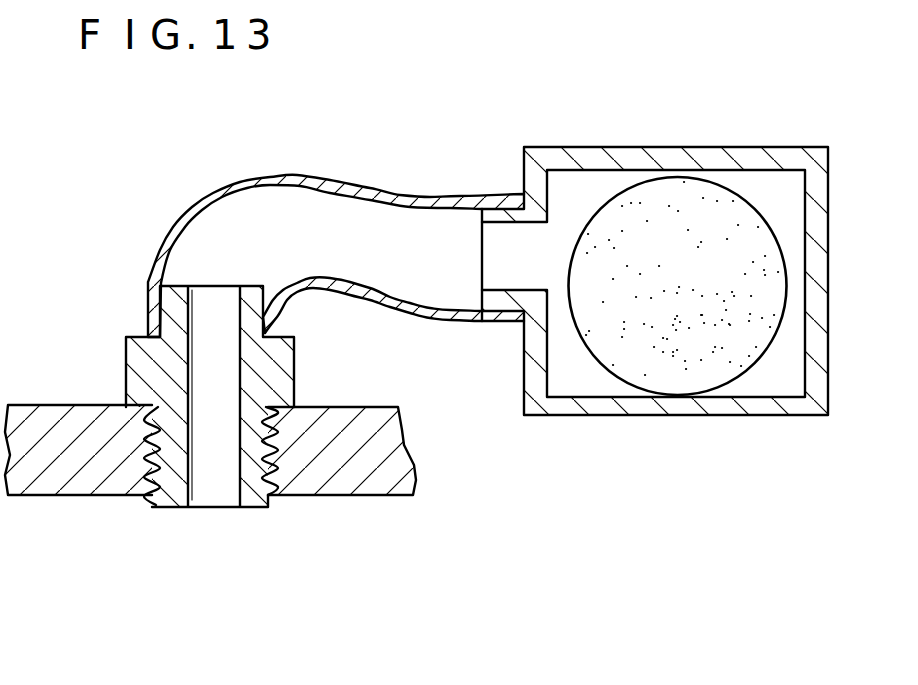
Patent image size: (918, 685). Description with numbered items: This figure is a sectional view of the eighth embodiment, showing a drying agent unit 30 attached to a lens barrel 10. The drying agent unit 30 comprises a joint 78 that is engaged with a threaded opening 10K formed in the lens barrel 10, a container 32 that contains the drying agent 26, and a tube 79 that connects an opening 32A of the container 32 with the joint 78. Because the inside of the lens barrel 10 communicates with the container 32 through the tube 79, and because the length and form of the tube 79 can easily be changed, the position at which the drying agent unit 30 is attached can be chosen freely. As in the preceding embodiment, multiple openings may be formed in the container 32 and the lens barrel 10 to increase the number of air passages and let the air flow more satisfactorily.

The lens barrel 10 is at (48, 420).
The threaded opening 10K is at (162, 475).
The joint 78 is at (136, 352).
The tube 79 is at (159, 254).
The drying agent unit 30 is at (489, 160).
The container 32 is at (623, 156).
The opening 32A is at (481, 274).
The drying agent 26 is at (622, 367).